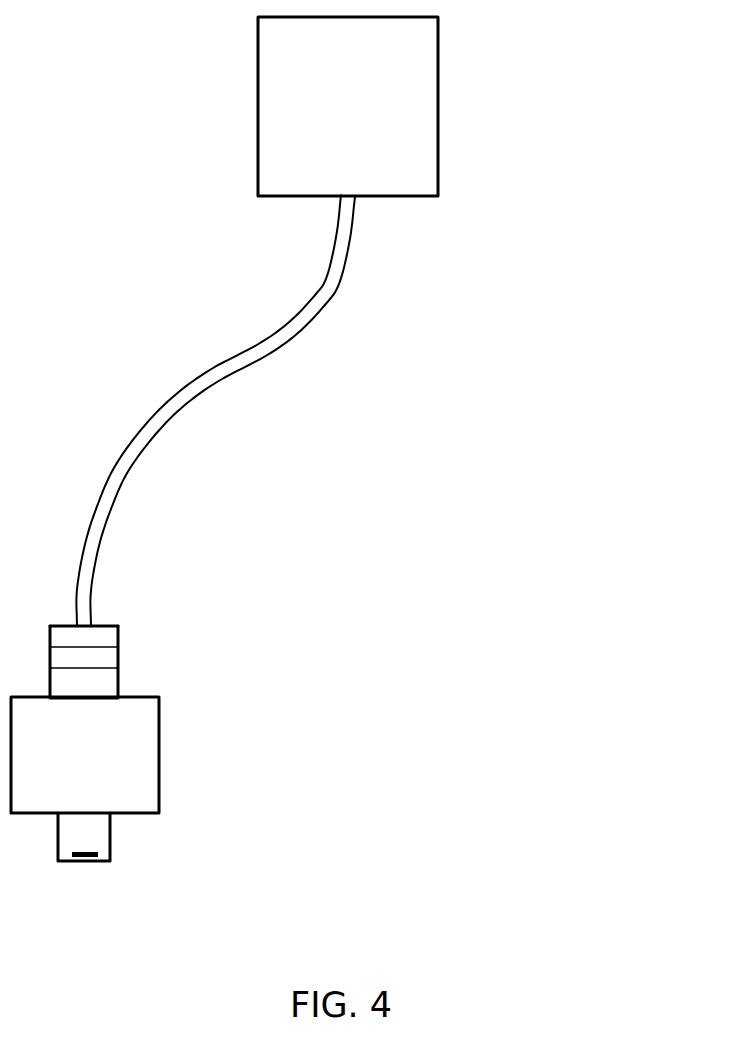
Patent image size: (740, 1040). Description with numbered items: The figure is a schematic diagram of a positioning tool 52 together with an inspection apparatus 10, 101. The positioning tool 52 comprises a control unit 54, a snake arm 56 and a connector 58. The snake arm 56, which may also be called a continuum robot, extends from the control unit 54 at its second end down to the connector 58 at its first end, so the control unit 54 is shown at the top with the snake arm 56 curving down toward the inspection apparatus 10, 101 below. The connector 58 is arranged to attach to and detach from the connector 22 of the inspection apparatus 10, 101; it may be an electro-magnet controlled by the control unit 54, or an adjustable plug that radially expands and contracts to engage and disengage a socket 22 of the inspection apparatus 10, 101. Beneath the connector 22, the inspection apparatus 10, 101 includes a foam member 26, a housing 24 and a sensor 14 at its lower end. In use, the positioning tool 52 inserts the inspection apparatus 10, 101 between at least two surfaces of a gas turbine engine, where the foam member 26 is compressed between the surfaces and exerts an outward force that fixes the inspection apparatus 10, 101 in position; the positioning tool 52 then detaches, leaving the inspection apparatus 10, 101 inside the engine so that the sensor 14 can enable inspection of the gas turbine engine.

The control unit 54 is at (258, 64).
The snake arm 56 is at (300, 327).
The positioning tool 52 is at (586, 213).
The inspection apparatus 10 is at (308, 686).
The inspection apparatus 101 is at (308, 686).
The connector 58 is at (62, 633).
The connector 22 is at (110, 657).
The foam member 26 is at (143, 753).
The housing 24 is at (107, 833).
The sensor 14 is at (87, 862).